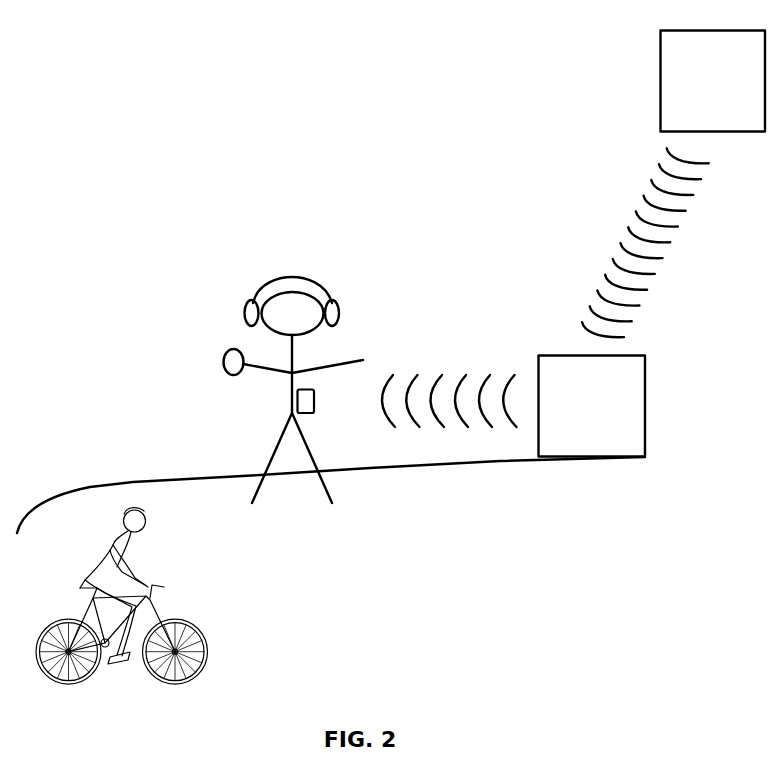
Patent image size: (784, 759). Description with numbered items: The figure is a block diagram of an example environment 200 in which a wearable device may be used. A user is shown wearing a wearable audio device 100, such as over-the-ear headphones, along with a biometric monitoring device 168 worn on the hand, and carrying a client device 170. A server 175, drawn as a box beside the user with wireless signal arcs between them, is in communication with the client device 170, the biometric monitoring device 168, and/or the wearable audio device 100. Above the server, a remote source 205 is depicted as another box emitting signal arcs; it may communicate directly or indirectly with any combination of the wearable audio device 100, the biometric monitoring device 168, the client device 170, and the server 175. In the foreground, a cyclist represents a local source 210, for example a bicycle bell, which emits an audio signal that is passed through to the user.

The environment 200 is at (325, 133).
The wearable audio device 100 is at (253, 323).
The biometric monitoring device 168 is at (223, 370).
The client device 170 is at (307, 413).
The server 175 is at (577, 426).
The remote source 205 is at (699, 116).
The local source 210 is at (145, 568).